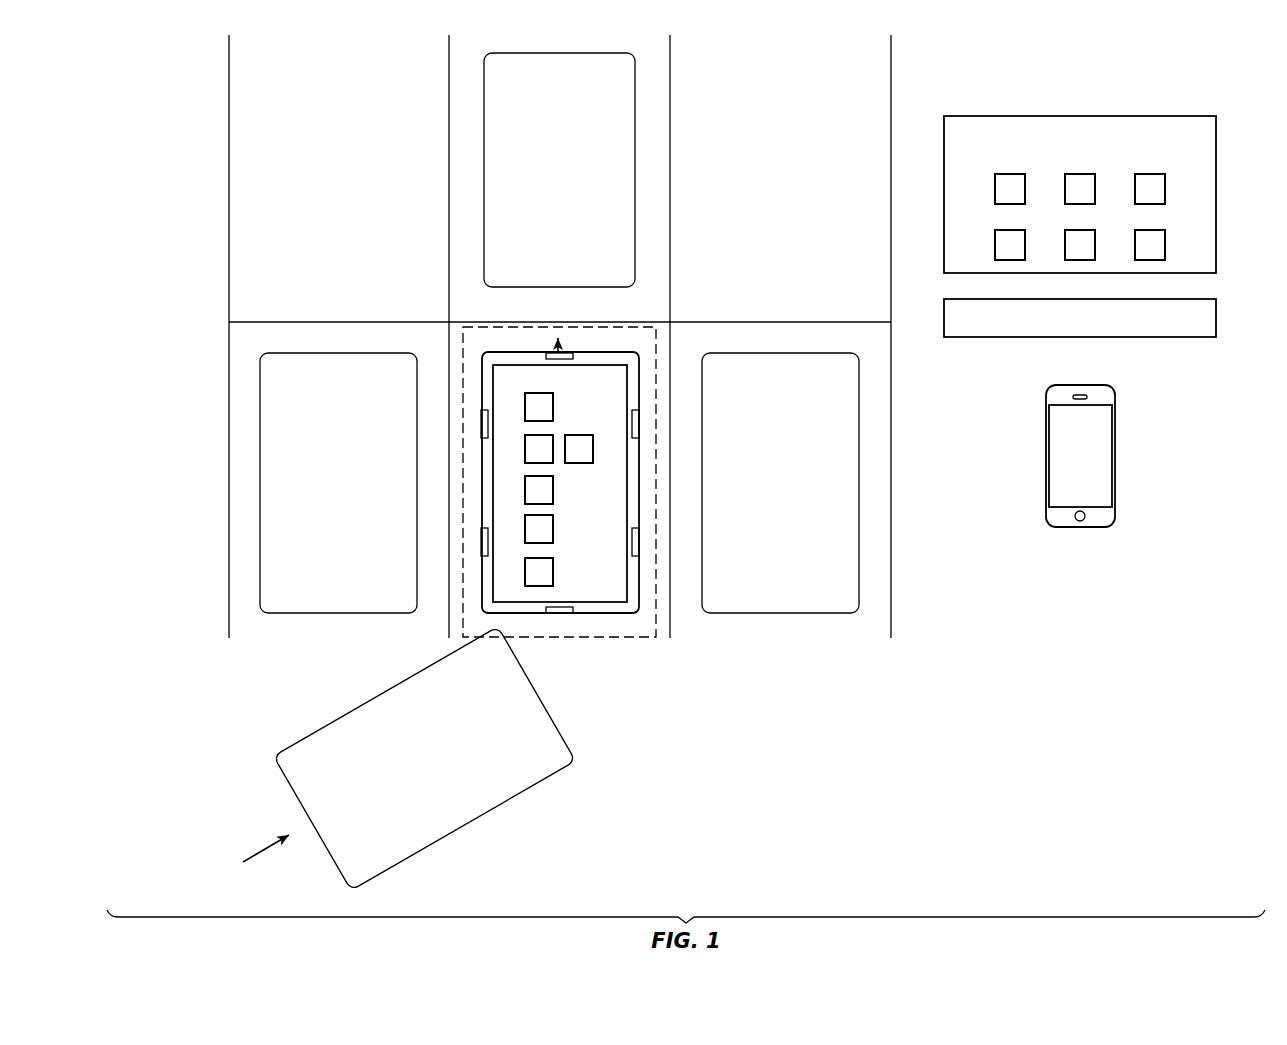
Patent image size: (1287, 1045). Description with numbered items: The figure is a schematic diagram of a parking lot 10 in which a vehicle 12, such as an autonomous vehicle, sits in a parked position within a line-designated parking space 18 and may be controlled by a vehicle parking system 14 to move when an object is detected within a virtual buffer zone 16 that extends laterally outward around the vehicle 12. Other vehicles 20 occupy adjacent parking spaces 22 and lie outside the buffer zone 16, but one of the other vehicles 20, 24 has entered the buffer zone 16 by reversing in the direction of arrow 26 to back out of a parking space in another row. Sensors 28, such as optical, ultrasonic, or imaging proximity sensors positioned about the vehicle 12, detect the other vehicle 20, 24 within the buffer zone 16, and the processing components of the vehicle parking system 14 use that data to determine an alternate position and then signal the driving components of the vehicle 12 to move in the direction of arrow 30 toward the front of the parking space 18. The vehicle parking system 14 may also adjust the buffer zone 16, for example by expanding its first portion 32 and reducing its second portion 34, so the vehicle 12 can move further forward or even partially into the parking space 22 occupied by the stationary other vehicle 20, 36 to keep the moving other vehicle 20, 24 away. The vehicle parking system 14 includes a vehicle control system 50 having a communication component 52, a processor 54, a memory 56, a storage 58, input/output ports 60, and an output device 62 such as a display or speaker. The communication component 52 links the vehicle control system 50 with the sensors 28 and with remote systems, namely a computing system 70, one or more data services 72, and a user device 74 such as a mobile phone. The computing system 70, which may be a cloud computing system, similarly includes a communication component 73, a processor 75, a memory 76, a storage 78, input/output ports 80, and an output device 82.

The parking lot 10 is at (174, 58).
The vehicle 12 is at (613, 614).
The vehicle parking system 14 is at (664, 738).
The buffer zone 16 is at (655, 640).
The parking space 18 is at (457, 330).
The other vehicles 20 is at (340, 352).
The adjacent parking spaces 22 is at (474, 264).
The moving other vehicle 24 is at (462, 823).
The arrow 26 is at (270, 845).
The sensors 28 is at (482, 526).
The arrow 30 is at (562, 348).
The first portion of the buffer zone 32 is at (563, 646).
The second portion of the buffer zone 34 is at (641, 321).
The stationary other vehicle 36 is at (560, 52).
The vehicle control system 50 is at (627, 572).
The communication component 52 is at (525, 401).
The processor 54 is at (525, 443).
The memory 56 is at (594, 447).
The storage 58 is at (525, 484).
The input/output ports 60 is at (525, 523).
The output device 62 is at (525, 566).
The computing system 70 is at (1216, 190).
The data services 72 is at (1216, 313).
The communication component 73 is at (1010, 174).
The user device 74 is at (1115, 453).
The processor 75 is at (1080, 174).
The memory 76 is at (1150, 174).
The storage 78 is at (1010, 230).
The input/output ports 80 is at (1080, 230).
The output device 82 is at (1150, 230).